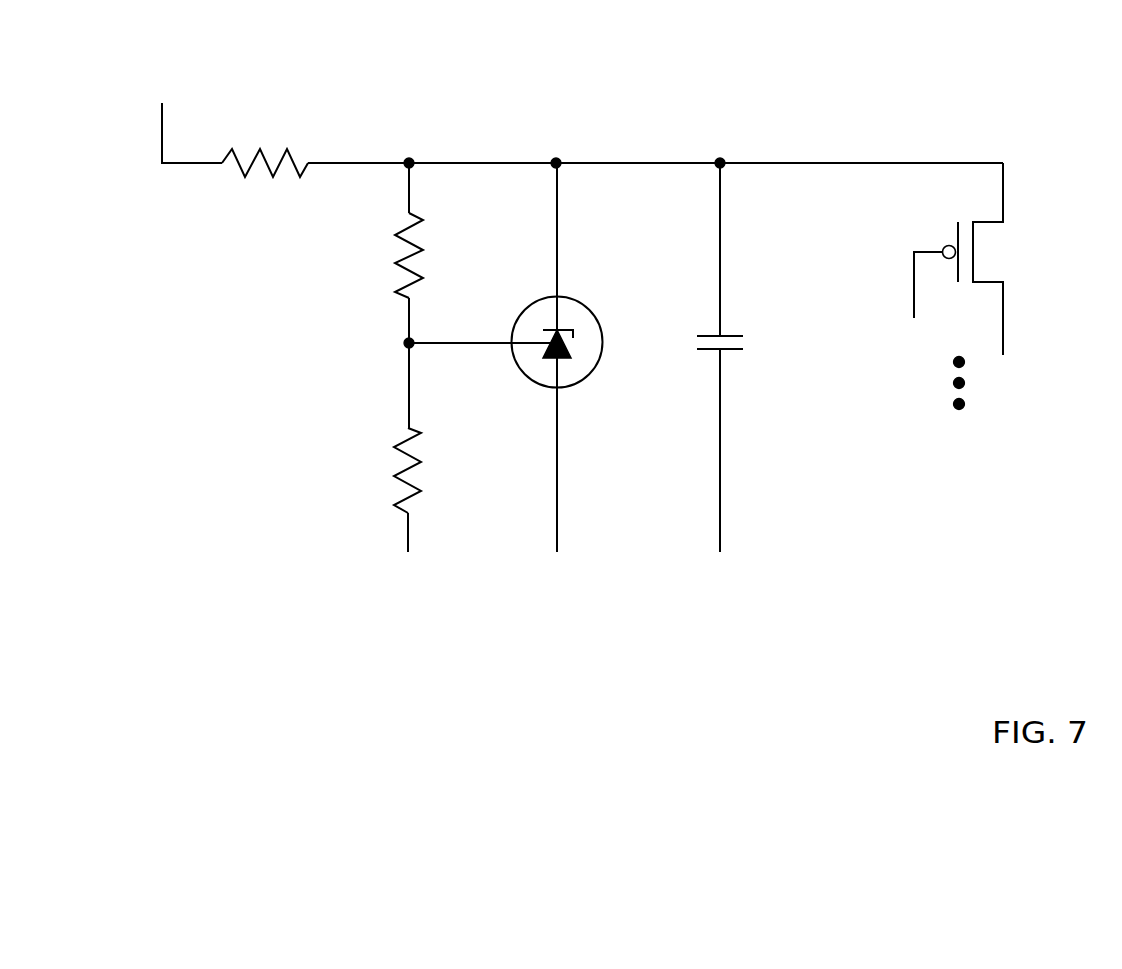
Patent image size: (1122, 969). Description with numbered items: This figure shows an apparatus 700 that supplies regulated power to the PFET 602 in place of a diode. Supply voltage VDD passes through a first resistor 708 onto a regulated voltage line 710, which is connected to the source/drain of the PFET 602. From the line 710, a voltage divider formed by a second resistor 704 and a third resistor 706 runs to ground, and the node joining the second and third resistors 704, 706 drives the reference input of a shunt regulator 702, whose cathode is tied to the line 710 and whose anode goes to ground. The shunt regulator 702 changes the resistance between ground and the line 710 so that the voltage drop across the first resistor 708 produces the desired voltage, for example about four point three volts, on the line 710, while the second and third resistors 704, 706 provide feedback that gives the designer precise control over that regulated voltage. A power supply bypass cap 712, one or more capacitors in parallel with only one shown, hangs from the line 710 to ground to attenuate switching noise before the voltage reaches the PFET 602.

The apparatus 700 is at (320, 699).
The shunt regulator 702 is at (590, 372).
The resistor R2 704 is at (402, 265).
The resistor R3 706 is at (406, 441).
The resistor R1 708 is at (243, 170).
The regulated voltage line 710 is at (810, 161).
The power supply bypass cap 712 is at (752, 342).
The PFET 602 is at (988, 249).